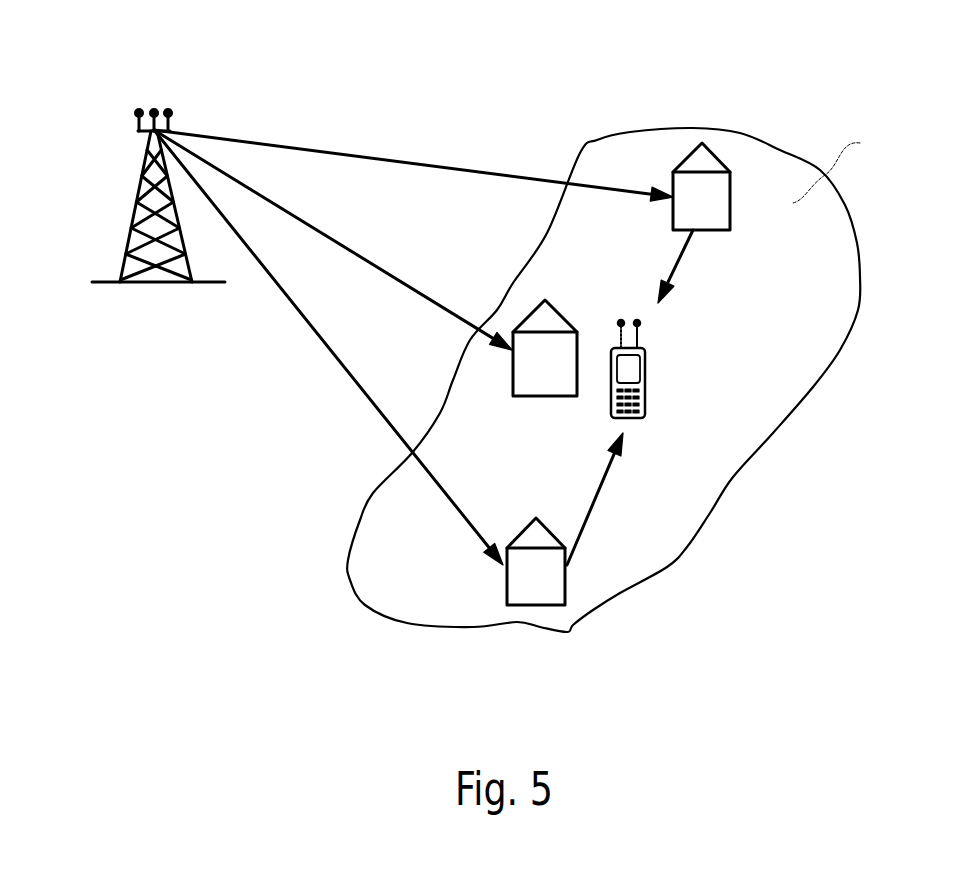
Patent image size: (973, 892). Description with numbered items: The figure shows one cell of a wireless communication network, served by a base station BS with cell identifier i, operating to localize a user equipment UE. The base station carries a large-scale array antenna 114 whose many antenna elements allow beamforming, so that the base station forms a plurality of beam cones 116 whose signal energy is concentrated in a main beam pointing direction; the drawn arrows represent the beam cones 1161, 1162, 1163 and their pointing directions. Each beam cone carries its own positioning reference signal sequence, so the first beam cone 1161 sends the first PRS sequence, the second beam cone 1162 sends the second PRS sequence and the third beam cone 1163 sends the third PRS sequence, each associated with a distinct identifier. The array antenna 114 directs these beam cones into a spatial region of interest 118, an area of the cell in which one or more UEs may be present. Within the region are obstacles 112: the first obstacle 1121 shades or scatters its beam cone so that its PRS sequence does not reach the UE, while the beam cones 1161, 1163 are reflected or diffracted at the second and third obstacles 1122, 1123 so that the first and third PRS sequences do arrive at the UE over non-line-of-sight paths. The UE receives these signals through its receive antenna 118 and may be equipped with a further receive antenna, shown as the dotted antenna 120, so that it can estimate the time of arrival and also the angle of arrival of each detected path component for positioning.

The large-scale array antenna 114 is at (128, 110).
The beam cones 116 is at (413, 314).
The first beam cone 1161 is at (308, 148).
The second beam cone 1162 is at (305, 228).
The third beam cone 1163 is at (345, 370).
The obstacles 112 is at (625, 383).
The first obstacle 1121 is at (528, 400).
The second obstacle 1122 is at (705, 180).
The third obstacle 1123 is at (537, 577).
The spatial region of interest 118 is at (793, 370).
The dotted antenna 120 is at (618, 330).